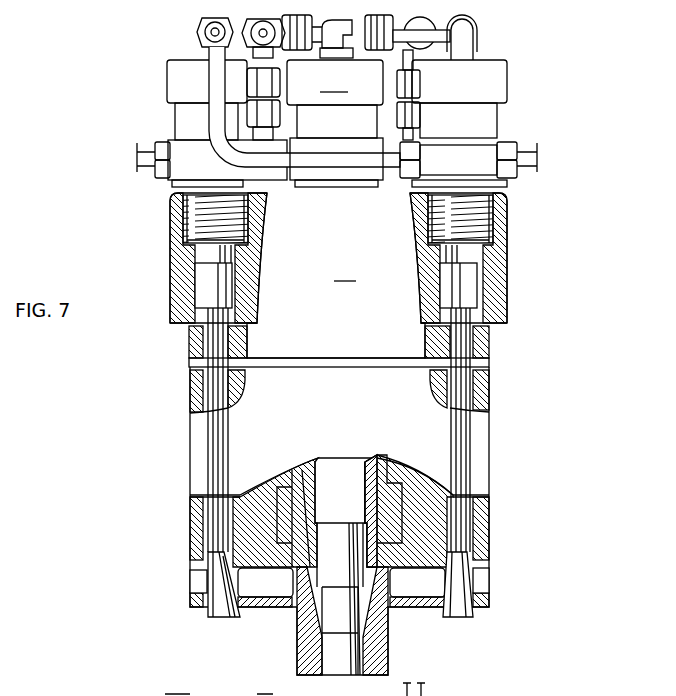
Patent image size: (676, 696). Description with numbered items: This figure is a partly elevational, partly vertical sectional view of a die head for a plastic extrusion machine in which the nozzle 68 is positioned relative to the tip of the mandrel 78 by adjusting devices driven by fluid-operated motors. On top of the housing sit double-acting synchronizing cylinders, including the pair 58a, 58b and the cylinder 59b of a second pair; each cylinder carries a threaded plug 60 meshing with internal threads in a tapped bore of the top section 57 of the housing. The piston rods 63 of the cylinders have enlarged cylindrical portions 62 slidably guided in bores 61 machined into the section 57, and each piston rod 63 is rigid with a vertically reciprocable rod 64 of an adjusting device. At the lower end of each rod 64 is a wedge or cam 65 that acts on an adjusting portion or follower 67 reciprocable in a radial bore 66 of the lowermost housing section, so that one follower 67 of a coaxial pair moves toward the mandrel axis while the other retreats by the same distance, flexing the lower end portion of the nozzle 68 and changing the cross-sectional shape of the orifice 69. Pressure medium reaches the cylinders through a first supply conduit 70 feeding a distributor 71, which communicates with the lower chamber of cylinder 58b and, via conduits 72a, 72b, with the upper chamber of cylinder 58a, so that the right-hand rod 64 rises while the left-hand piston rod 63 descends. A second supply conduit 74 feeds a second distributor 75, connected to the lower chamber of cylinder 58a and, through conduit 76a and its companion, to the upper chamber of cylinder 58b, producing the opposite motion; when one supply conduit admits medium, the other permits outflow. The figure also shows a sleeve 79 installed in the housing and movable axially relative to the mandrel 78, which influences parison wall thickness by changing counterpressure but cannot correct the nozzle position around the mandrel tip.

The top section of the housing 57 is at (336, 275).
The double-acting synchronizing cylinder 58a is at (182, 77).
The double-acting synchronizing cylinder 58b is at (488, 83).
The double-acting synchronizing cylinder 59b is at (332, 101).
The threaded plug 60 is at (190, 215).
The bore 61 is at (487, 338).
The enlarged cylindrical portion 62 is at (210, 295).
The piston rod 63 is at (210, 253).
The vertically reciprocable rod 64 is at (488, 395).
The wedge or cam 65 is at (222, 612).
The radial bore 66 is at (200, 580).
The adjusting portion or follower 67 is at (270, 583).
The nozzle 68 is at (393, 628).
The orifice 69 is at (360, 655).
The first supply conduit 70 is at (530, 158).
The distributor 71 is at (487, 137).
The conduit 72a is at (350, 167).
The conduit 72b is at (215, 127).
The second supply conduit 74 is at (140, 165).
The second distributor 75 is at (215, 695).
The conduit 76a is at (455, 695).
The mandrel 78 is at (348, 470).
The sleeve 79 is at (372, 457).